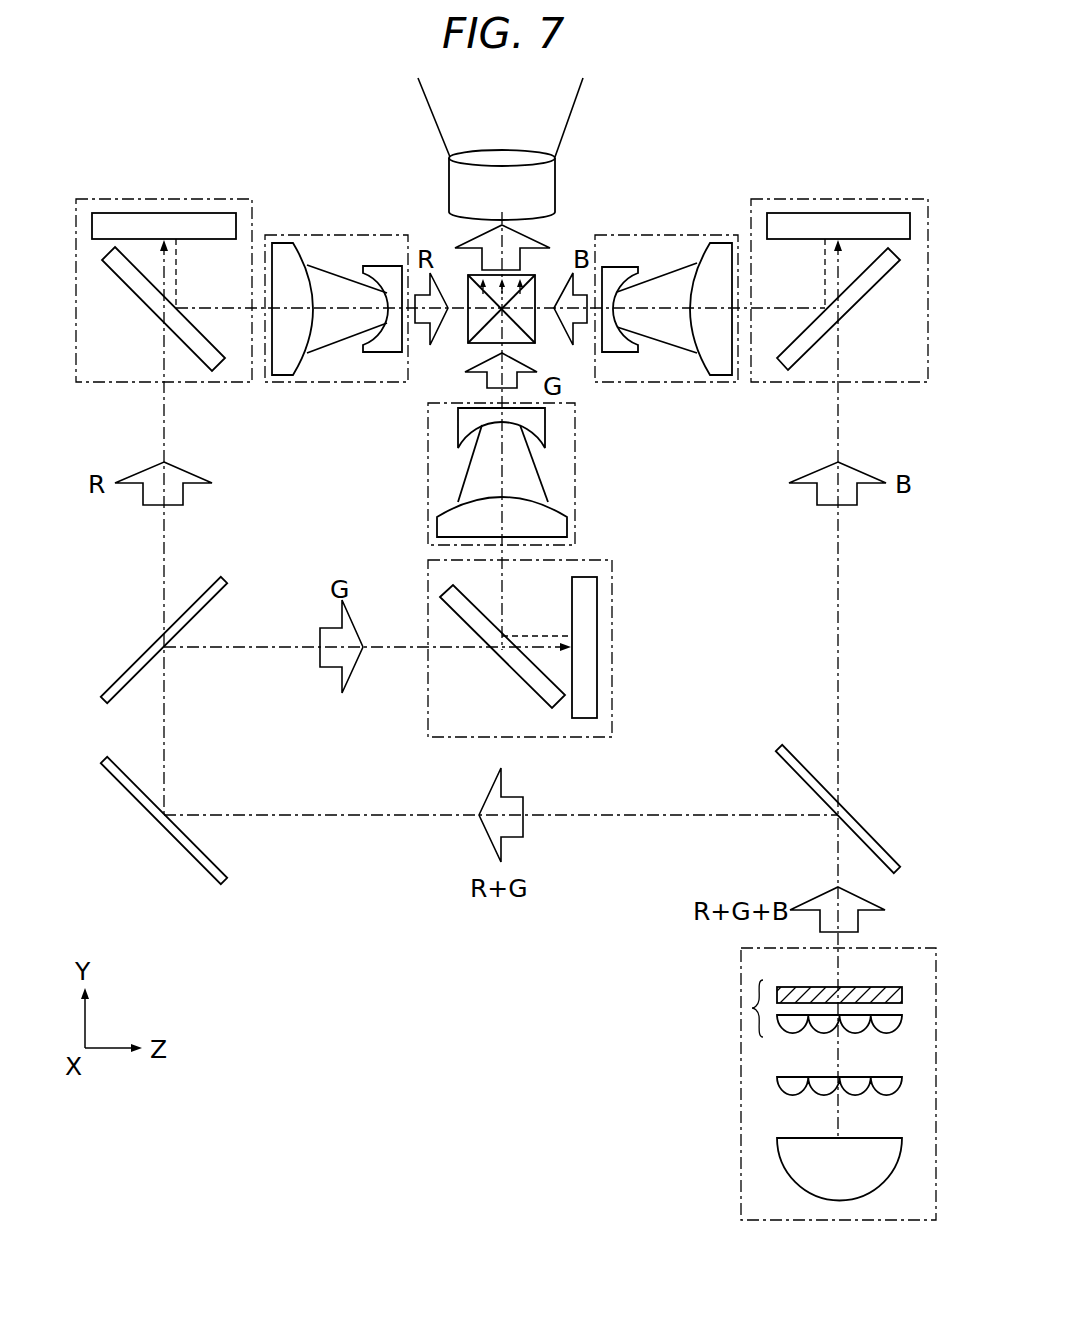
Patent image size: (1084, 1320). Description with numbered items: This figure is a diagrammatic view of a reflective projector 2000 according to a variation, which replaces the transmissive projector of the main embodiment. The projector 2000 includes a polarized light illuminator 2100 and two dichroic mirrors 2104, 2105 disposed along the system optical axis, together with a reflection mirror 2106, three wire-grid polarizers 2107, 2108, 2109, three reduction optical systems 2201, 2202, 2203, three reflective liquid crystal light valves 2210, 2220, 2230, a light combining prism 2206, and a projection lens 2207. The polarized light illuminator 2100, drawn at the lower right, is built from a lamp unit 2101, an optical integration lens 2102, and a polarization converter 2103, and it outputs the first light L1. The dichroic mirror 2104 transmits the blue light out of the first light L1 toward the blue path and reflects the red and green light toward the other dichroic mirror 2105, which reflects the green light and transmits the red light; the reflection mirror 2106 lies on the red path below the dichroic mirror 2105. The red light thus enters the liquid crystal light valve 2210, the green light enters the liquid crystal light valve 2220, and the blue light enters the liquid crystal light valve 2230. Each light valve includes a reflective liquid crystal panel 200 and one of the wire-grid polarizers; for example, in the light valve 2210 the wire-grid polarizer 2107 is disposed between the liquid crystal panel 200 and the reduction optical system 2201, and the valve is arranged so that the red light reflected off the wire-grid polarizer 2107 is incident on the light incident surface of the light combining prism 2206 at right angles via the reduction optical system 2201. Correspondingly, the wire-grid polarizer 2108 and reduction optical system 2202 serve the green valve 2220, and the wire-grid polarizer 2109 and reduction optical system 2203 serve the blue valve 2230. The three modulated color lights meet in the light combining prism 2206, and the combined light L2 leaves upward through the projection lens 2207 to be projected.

The projector 2000 is at (906, 99).
The reflective liquid crystal panel 200 is at (203, 213).
The wire-grid polarizer 2107 is at (125, 285).
The wire-grid polarizer 2109 is at (877, 285).
The reflective liquid crystal light valve 2210 is at (92, 382).
The reflective liquid crystal light valve 2230 is at (785, 382).
The reduction optical system 2201 is at (348, 382).
The reduction optical system 2203 is at (662, 382).
The light combining prism 2206 is at (477, 345).
The projection lens 2207 is at (557, 183).
The combined image light L2 is at (504, 252).
The reduction optical system 2202 is at (575, 495).
The reflective liquid crystal light valve 2220 is at (612, 588).
The wire-grid polarizer 2108 is at (500, 662).
The dichroic mirror 2105 is at (110, 682).
The reflection mirror 2106 is at (215, 862).
The dichroic mirror 2104 is at (882, 840).
The polarized light illuminator 2100 is at (741, 965).
The polarization converter 2103 is at (752, 1008).
The optical integration lens 2102 is at (777, 1087).
The first light L1 is at (838, 1130).
The lamp unit 2101 is at (787, 1178).